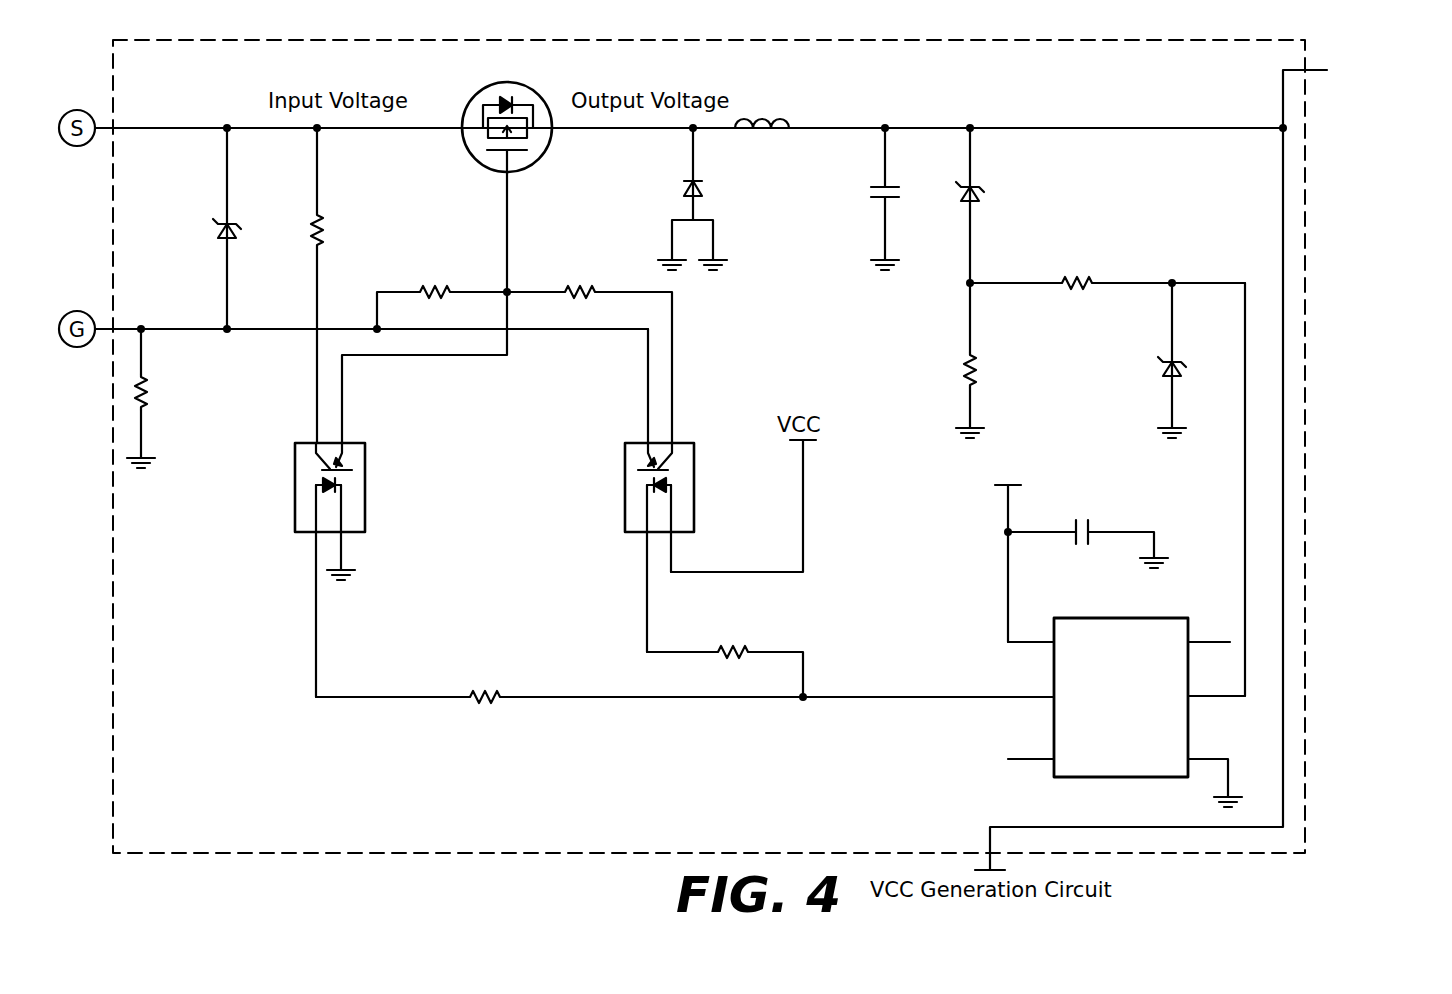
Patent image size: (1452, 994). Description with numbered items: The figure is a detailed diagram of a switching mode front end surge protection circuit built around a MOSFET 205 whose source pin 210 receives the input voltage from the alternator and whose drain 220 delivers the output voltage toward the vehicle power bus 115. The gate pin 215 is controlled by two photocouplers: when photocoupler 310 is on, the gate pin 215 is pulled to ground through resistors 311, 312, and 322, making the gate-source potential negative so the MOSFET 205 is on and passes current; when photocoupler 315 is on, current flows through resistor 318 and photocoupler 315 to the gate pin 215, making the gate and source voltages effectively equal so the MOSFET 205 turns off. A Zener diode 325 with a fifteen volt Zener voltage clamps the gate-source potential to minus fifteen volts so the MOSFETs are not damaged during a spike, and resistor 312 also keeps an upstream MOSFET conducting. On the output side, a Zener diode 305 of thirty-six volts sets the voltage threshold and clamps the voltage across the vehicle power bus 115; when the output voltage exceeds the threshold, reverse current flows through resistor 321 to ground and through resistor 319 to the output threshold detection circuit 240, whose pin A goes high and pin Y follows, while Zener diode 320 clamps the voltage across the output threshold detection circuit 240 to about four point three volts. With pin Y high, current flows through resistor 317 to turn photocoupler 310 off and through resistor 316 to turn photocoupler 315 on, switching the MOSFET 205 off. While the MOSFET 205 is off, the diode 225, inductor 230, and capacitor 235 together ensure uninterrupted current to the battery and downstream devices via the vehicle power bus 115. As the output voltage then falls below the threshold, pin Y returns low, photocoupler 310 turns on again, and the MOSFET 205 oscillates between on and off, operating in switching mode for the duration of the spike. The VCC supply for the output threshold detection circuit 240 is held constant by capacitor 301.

The vehicle power bus 115 is at (1394, 98).
The MOSFET 205 is at (540, 97).
The source pin 210 is at (452, 104).
The gate pin 215 is at (525, 198).
The drain 220 is at (575, 148).
The diode 225 is at (703, 189).
The inductor 230 is at (793, 120).
The capacitor 235 is at (874, 198).
The output threshold detection circuit 240 is at (1160, 618).
The capacitor 301 is at (1092, 526).
The Zener diode 305 is at (978, 205).
The photocoupler 310 is at (625, 510).
The resistor 311 is at (577, 284).
The resistor 312 is at (434, 284).
The photocoupler 315 is at (366, 446).
The resistor 316 is at (504, 694).
The resistor 317 is at (748, 650).
The resistor 318 is at (324, 217).
The resistor 319 is at (1088, 280).
The Zener diode 320 is at (1162, 356).
The resistor 321 is at (962, 360).
The resistor 322 is at (146, 381).
The Zener diode 325 is at (239, 212).